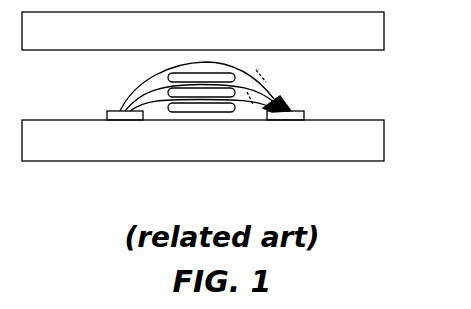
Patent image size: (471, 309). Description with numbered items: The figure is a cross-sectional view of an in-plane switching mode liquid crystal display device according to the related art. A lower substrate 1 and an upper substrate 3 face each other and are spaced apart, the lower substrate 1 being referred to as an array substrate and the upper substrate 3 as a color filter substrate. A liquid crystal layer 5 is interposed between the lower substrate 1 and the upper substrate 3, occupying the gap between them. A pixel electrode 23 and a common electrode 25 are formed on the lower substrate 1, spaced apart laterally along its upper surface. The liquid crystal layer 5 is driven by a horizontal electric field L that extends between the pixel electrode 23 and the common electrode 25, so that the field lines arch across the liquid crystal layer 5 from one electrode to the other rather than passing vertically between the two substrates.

The lower substrate 1 is at (402, 120).
The upper substrate 3 is at (402, 12).
The liquid crystal layer 5 is at (402, 50).
The pixel electrode 23 is at (124, 120).
The common electrode 25 is at (291, 120).
The horizontal electric field L is at (251, 101).